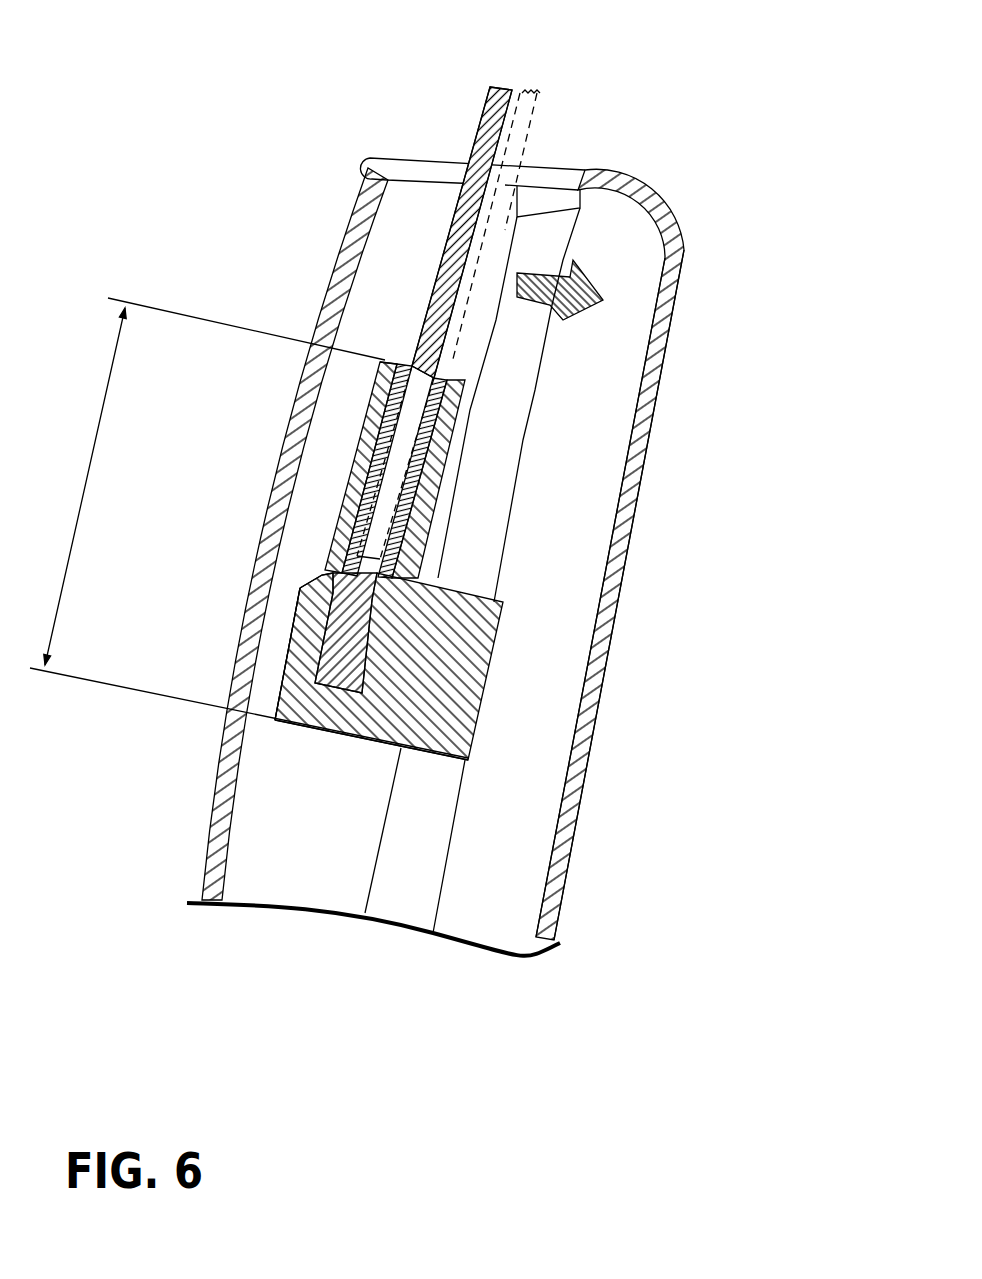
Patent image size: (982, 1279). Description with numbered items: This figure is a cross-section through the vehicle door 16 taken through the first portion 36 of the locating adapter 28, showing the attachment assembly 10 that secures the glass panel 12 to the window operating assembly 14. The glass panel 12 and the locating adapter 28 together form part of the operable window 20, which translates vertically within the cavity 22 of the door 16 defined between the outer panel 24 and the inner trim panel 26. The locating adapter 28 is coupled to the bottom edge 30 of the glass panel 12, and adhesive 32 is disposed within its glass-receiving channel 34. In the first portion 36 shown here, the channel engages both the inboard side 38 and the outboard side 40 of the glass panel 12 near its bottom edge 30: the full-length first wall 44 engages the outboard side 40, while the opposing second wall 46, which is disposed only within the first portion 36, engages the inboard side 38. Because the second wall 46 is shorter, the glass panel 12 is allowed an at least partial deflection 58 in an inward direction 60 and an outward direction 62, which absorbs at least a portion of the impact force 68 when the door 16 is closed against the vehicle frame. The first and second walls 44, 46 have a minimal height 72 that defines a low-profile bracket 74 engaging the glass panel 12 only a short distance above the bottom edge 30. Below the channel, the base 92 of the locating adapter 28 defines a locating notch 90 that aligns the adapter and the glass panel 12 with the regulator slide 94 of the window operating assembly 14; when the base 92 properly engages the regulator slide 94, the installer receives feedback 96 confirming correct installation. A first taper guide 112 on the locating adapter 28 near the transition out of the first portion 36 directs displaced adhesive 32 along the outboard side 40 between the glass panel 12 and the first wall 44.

The attachment assembly 10 is at (660, 639).
The glass panel 12 is at (490, 86).
The window operating assembly 14 is at (255, 780).
The door 16 is at (660, 805).
The operable window 20 is at (542, 155).
The cavity 22 is at (552, 477).
The outer panel 24 is at (300, 414).
The inner trim panel 26 is at (655, 384).
The locating adapter 28 is at (318, 539).
The bottom edge 30 is at (300, 605).
The adhesive 32 is at (440, 482).
The glass-receiving channel 34 is at (360, 433).
The first portion 36 is at (462, 437).
The inboard side 38 is at (470, 228).
The outboard side 40 is at (433, 283).
The first wall 44 is at (345, 484).
The second wall 46 is at (462, 577).
The deflection 58 is at (541, 132).
The inward direction 60 is at (603, 152).
The outward direction 62 is at (450, 122).
The impact force 68 is at (605, 300).
The minimal height 72 is at (97, 432).
The low-profile bracket 74 is at (385, 598).
The locating notch 90 is at (470, 715).
The base 92 is at (350, 627).
The regulator slide 94 is at (428, 750).
The feedback 96 is at (282, 720).
The first taper guide 112 is at (375, 376).